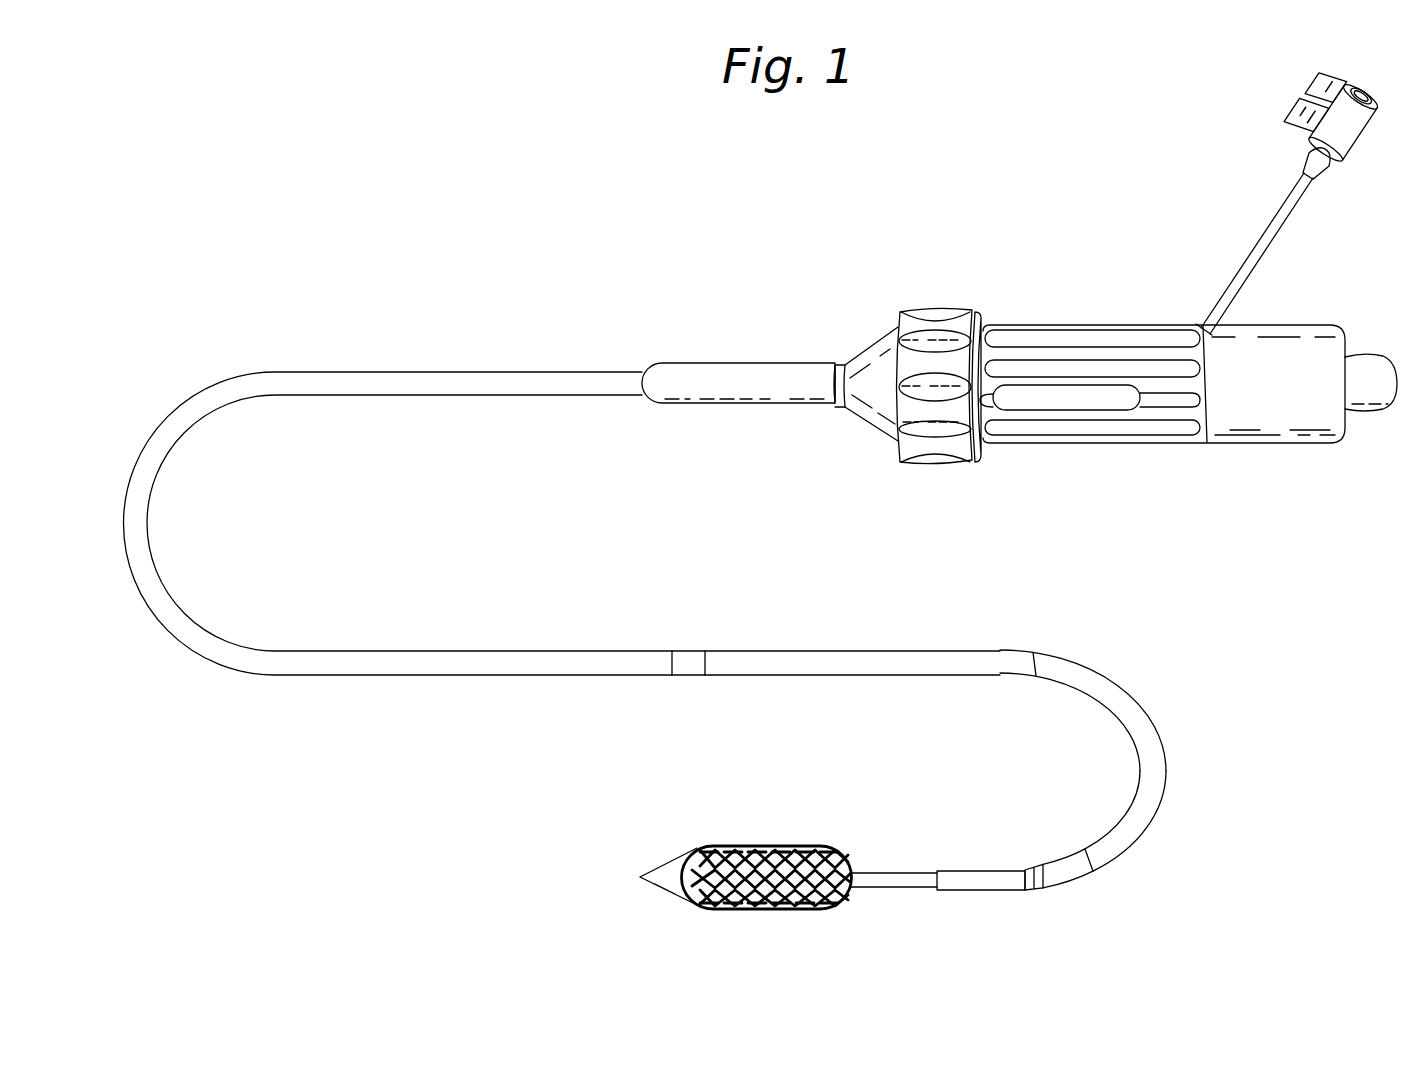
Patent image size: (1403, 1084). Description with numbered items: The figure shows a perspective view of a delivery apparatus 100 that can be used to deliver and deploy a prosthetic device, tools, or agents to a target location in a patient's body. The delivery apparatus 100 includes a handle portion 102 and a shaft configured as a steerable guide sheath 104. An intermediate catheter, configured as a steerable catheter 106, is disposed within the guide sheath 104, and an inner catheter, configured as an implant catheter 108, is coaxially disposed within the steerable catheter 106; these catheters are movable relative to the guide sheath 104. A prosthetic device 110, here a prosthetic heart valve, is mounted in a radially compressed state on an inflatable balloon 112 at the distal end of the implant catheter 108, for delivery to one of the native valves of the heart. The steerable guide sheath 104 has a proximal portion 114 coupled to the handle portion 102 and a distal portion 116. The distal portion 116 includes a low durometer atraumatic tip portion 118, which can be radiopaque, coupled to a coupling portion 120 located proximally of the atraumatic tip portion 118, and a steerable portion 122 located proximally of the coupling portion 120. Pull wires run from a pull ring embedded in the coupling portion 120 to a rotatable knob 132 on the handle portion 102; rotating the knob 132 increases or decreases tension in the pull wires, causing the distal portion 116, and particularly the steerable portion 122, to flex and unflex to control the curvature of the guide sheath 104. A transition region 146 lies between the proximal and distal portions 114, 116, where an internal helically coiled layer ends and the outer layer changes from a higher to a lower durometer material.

The delivery apparatus 100 is at (406, 202).
The handle portion 102 is at (1050, 325).
The steerable guide sheath 104 is at (158, 431).
The steerable catheter 106 is at (979, 870).
The implant catheter 108 is at (882, 870).
The prosthetic device 110 is at (748, 845).
The inflatable balloon 112 is at (693, 862).
The proximal portion 114 is at (505, 360).
The distal portion 116 is at (1163, 828).
The atraumatic tip portion 118 is at (1030, 891).
The coupling portion 120 is at (1063, 884).
The steerable portion 122 is at (1163, 714).
The rotatable knob 132 is at (948, 307).
The transition region 146 is at (690, 653).